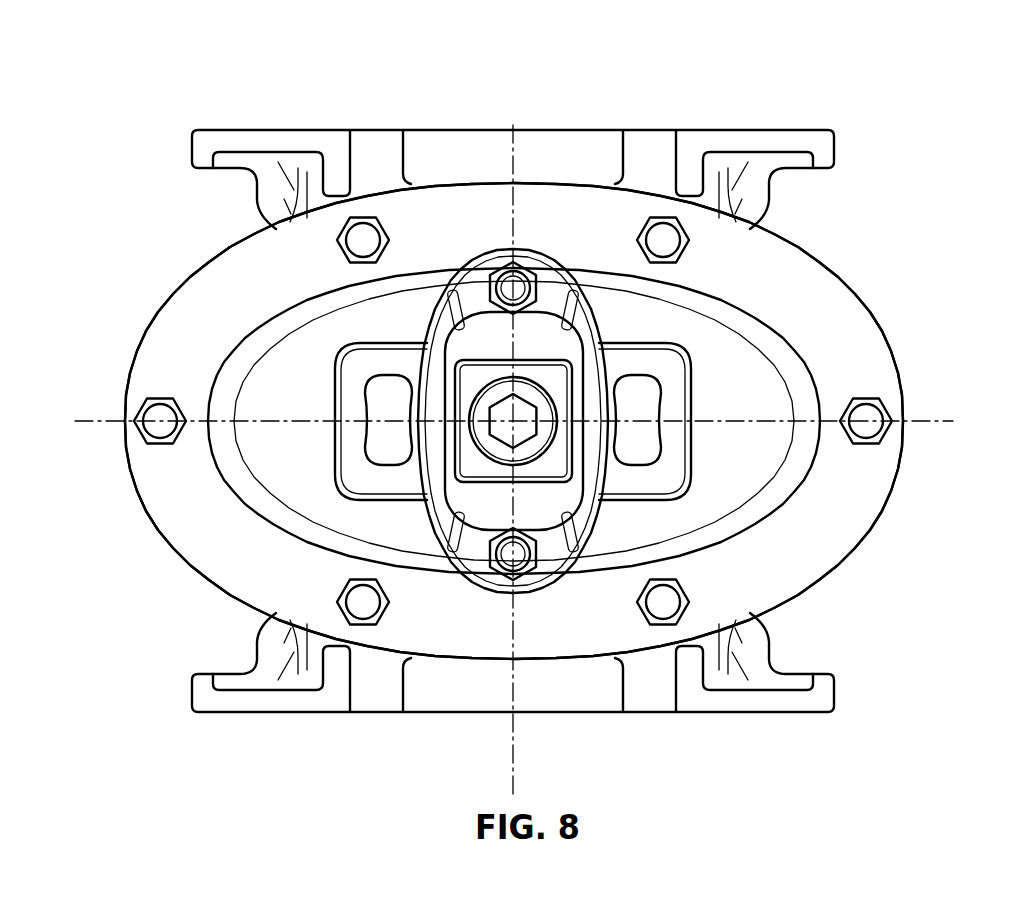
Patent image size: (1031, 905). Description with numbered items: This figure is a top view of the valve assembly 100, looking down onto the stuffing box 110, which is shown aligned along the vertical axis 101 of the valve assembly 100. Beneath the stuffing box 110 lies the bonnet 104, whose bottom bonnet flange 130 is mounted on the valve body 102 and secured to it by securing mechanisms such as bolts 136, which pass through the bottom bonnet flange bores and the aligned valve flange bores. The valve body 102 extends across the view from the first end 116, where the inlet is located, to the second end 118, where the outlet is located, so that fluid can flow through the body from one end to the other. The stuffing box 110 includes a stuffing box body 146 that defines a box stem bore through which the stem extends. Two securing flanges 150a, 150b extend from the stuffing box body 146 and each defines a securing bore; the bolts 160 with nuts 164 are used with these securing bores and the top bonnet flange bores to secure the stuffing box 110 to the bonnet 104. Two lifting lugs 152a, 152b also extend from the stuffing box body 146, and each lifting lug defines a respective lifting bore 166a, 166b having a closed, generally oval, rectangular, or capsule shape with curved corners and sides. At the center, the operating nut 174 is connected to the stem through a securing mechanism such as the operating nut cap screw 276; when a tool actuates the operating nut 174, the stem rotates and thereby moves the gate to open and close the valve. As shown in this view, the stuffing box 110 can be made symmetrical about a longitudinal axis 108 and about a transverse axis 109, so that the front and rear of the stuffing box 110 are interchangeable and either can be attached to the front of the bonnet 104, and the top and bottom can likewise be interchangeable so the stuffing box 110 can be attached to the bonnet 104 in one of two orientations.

The valve assembly 100 is at (931, 152).
The vertical axis 101 is at (447, 497).
The valve body 102 is at (621, 140).
The bonnet 104 is at (786, 374).
The longitudinal axis 108 is at (513, 758).
The transverse axis 109 is at (925, 425).
The stuffing box 110 is at (410, 337).
The first end 116 is at (392, 130).
The second end 118 is at (720, 703).
The bottom bonnet flange 130 is at (867, 497).
The bolts 136 is at (383, 231).
The stuffing box body 146 is at (600, 313).
The securing flange 150a is at (533, 283).
The securing flange 150b is at (492, 585).
The lifting lug 152a is at (692, 366).
The lifting lug 152b is at (357, 472).
The bolts 160 is at (503, 288).
The nuts 164 is at (548, 290).
The lifting bore 166a is at (682, 360).
The lifting bore 166b is at (372, 443).
The operating nut 174 is at (586, 545).
The operating nut cap screw 276 is at (445, 498).